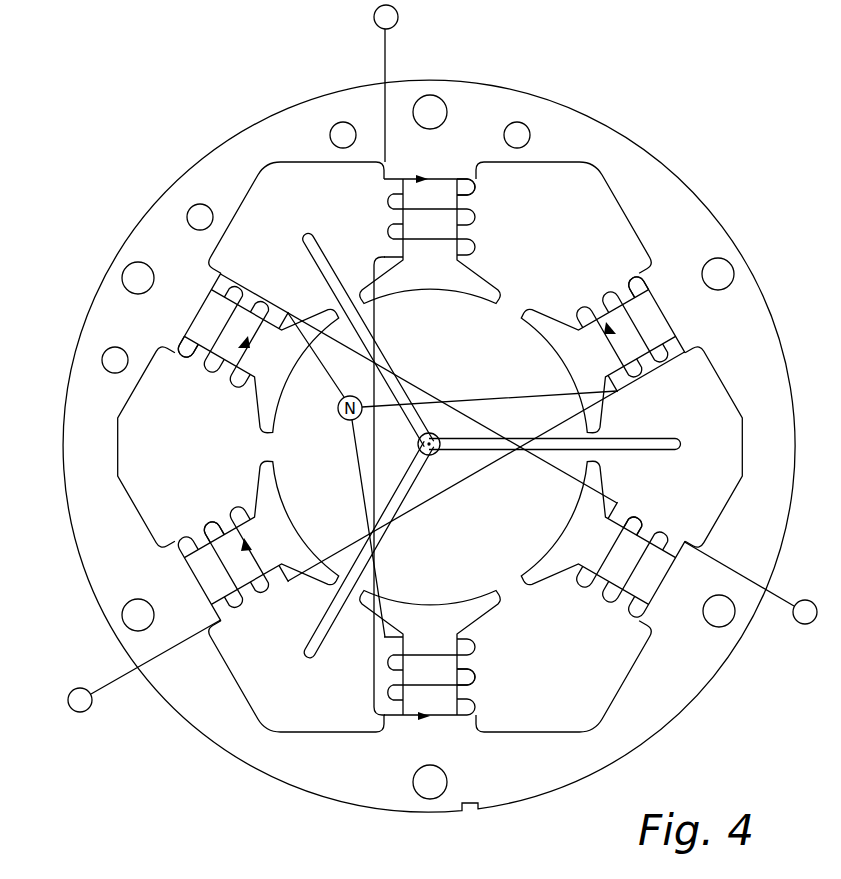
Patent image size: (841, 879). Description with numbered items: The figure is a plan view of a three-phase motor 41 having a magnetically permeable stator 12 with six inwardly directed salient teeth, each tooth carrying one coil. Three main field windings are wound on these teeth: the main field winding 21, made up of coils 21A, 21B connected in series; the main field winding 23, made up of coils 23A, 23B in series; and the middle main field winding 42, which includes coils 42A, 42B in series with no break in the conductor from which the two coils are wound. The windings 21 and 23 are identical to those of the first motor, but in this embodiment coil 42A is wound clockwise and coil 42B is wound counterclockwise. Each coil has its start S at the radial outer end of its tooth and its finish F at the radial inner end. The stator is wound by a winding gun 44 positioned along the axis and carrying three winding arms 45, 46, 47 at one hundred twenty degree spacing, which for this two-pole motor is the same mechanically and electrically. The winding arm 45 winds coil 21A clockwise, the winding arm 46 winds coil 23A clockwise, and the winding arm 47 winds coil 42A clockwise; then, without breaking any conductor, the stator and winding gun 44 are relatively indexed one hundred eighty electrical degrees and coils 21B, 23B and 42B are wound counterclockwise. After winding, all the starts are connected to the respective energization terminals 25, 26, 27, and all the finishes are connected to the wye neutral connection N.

The stator 12 is at (678, 182).
The three-phase motor 41 is at (647, 116).
The main field winding 21 is at (441, 177).
The coil 21A is at (474, 188).
The coil 21B is at (471, 678).
The main field winding 42 is at (670, 318).
The coil 42A is at (206, 521).
The coil 42B is at (634, 272).
The main field winding 23 is at (657, 590).
The coil 23A is at (641, 507).
The coil 23B is at (187, 372).
The energization terminal 25 is at (398, 17).
The energization terminal 26 is at (808, 624).
The energization terminal 27 is at (87, 711).
The winding gun 44 is at (439, 433).
The winding arm 45 is at (322, 242).
The winding arm 46 is at (634, 438).
The winding arm 47 is at (323, 648).